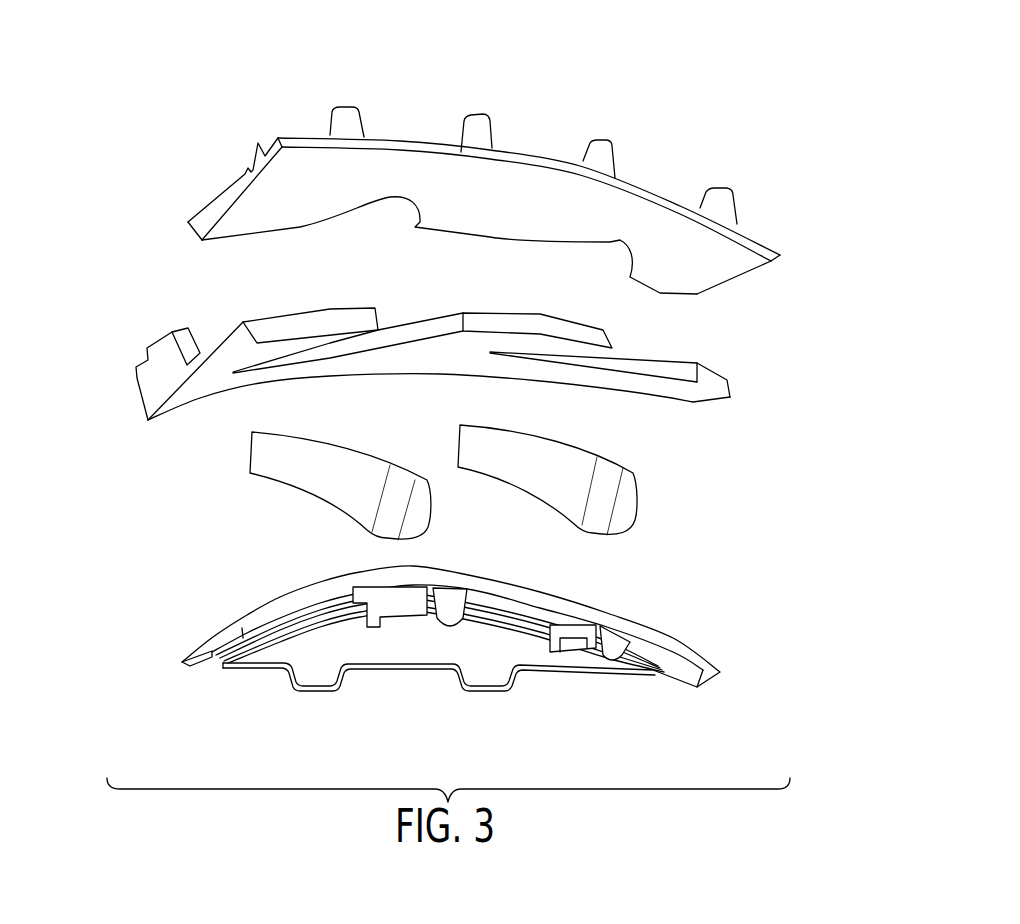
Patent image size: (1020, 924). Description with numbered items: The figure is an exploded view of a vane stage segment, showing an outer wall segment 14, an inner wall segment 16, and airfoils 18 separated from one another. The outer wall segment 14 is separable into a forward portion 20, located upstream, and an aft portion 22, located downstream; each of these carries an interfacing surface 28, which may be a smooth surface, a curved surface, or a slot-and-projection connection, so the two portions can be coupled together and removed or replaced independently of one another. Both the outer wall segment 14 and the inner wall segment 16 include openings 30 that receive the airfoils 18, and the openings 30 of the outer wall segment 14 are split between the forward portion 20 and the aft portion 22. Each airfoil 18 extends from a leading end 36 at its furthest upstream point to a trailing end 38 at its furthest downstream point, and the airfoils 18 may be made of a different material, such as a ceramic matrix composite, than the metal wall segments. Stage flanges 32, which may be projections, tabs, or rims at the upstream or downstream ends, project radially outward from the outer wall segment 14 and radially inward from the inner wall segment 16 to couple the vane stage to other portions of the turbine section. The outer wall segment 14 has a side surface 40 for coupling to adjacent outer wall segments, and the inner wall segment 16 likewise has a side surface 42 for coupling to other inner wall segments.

The outer wall segment 14 is at (112, 252).
The inner wall segment 16 is at (257, 667).
The airfoils 18 is at (452, 532).
The forward portion 20 is at (297, 136).
The aft portion 22 is at (162, 332).
The interfacing surface 28 is at (285, 325).
The openings 30 is at (384, 218).
The stage flanges 32 is at (477, 113).
The leading end 36 is at (428, 505).
The trailing end 38 is at (248, 450).
The side surface 40 is at (218, 213).
The side surface 42 is at (240, 647).